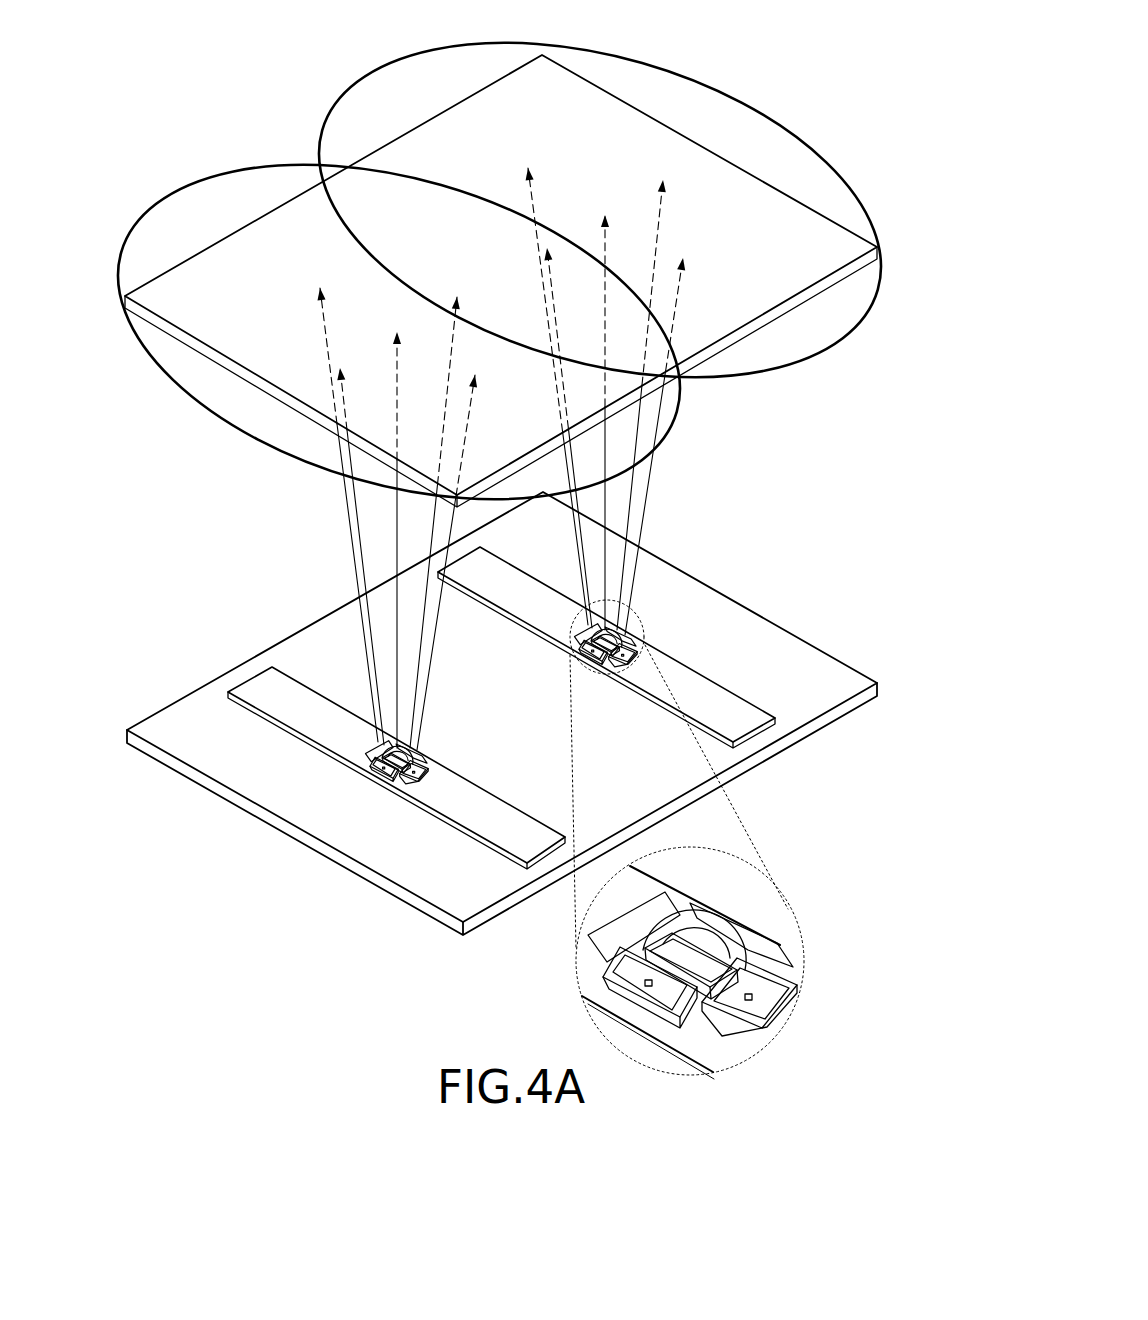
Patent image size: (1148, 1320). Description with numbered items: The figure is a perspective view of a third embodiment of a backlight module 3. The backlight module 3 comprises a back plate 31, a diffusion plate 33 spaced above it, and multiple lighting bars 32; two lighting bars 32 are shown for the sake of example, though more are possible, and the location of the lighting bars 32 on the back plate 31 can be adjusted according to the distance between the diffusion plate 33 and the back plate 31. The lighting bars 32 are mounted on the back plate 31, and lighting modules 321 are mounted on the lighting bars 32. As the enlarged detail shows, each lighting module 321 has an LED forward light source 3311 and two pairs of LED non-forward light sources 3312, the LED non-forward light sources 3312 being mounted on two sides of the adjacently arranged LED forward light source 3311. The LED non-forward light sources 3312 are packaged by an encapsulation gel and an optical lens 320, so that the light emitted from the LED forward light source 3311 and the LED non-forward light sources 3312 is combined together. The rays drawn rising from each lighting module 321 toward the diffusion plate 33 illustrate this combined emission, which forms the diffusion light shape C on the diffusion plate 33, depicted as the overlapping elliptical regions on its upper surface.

The backlight module 3 is at (174, 27).
The back plate 31 is at (305, 645).
The lighting bar 32 is at (248, 688).
The lighting module 321 is at (338, 773).
The optical lens 320 is at (722, 910).
The diffusion plate 33 is at (303, 207).
The LED forward light source 3311 is at (780, 960).
The LED non-forward light source 3312 is at (578, 955).
The diffusion light shape C is at (757, 378).